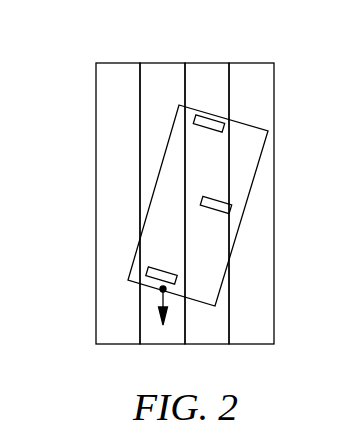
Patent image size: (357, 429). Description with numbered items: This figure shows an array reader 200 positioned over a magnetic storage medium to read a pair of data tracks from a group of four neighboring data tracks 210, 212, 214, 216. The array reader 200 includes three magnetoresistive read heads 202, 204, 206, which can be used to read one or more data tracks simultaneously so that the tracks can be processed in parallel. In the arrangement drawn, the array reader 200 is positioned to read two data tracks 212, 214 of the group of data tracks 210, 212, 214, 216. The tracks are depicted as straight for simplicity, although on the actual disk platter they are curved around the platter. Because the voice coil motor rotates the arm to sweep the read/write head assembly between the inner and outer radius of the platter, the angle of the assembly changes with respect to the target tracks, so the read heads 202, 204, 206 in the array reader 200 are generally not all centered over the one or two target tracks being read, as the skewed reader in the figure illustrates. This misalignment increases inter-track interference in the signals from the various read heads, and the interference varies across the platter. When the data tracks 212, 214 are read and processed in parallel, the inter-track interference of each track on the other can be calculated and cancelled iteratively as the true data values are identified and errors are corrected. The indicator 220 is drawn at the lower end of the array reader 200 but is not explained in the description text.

The array reader 200 is at (143, 249).
The magnetoresistive read head 202 is at (147, 268).
The magnetoresistive read head 204 is at (201, 204).
The magnetoresistive read head 206 is at (194, 116).
The data track 210 is at (109, 63).
The data track 212 is at (171, 63).
The data track 214 is at (202, 63).
The data track 216 is at (260, 63).
The write direction / starting point indicator 220 is at (163, 297).